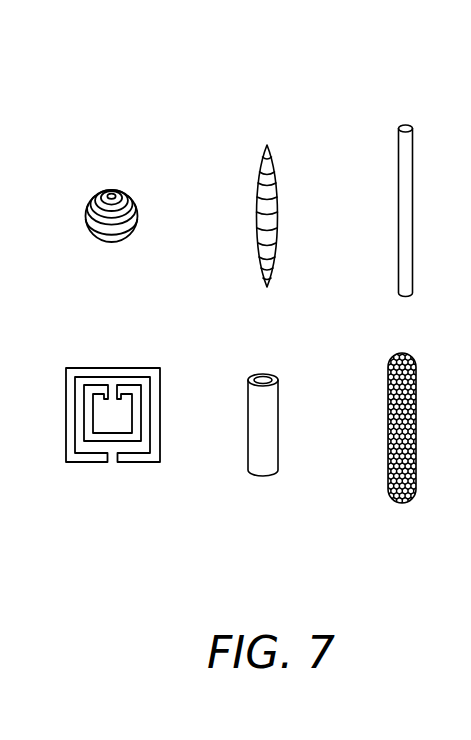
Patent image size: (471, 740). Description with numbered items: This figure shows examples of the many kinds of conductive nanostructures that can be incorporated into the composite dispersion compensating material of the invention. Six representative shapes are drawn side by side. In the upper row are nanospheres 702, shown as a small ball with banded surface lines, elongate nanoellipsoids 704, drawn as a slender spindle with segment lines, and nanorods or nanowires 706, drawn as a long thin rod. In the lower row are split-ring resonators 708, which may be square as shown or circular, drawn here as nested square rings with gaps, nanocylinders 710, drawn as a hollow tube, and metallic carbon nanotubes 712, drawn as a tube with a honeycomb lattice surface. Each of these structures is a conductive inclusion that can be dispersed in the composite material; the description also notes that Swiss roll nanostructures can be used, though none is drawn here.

The nanospheres 702 is at (118, 178).
The elongate nanoellipsoids 704 is at (277, 130).
The nanorods or nanowires 706 is at (420, 120).
The split-ring resonators 708 is at (92, 472).
The nanocylinders 710 is at (257, 488).
The metallic carbon nanotubes 712 is at (401, 512).